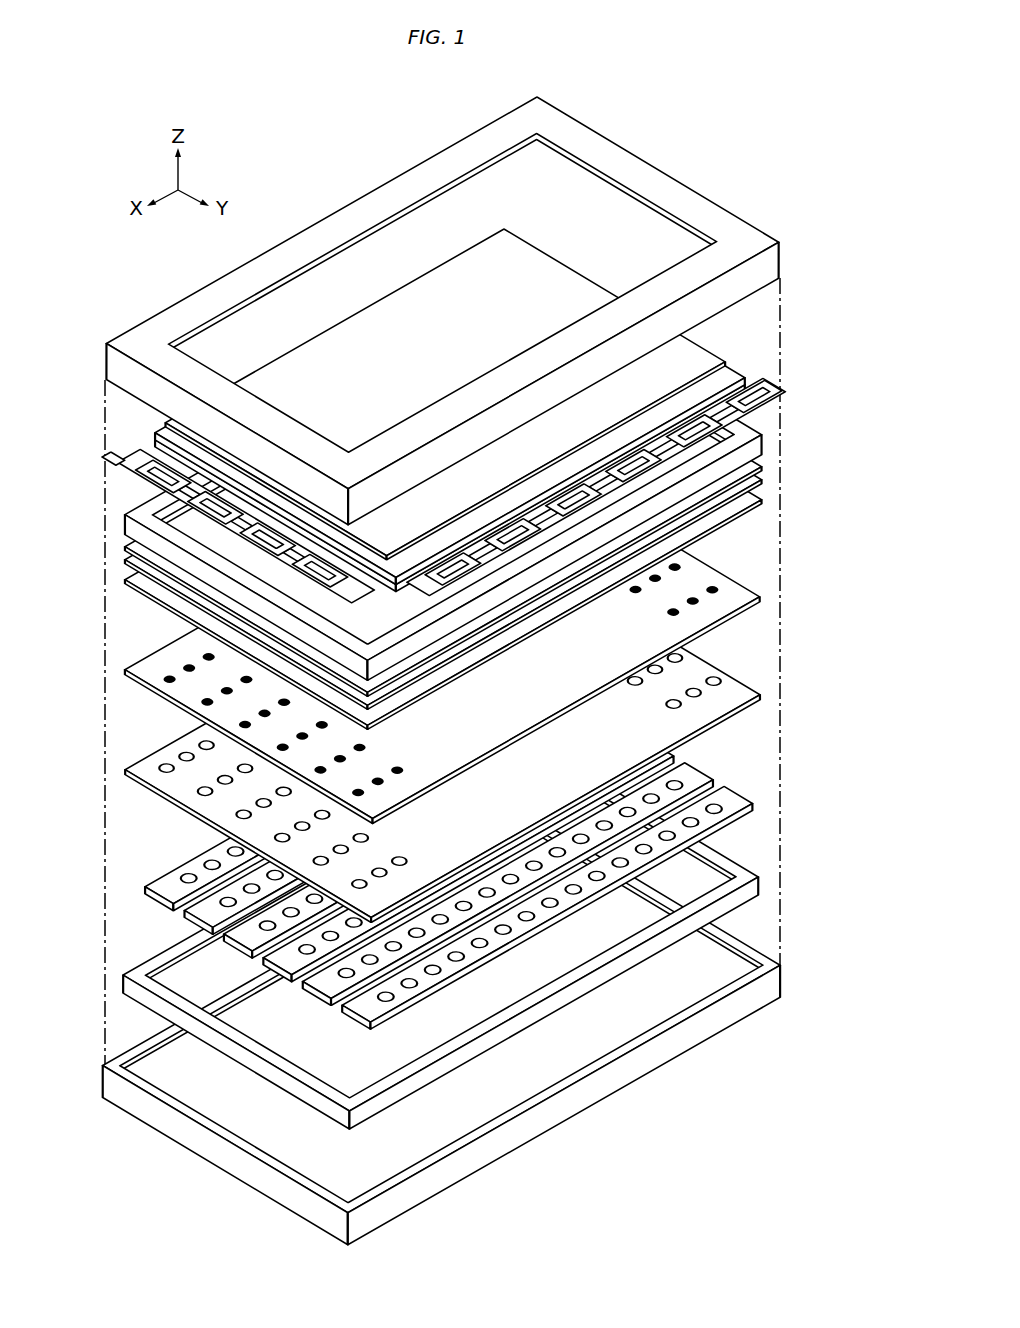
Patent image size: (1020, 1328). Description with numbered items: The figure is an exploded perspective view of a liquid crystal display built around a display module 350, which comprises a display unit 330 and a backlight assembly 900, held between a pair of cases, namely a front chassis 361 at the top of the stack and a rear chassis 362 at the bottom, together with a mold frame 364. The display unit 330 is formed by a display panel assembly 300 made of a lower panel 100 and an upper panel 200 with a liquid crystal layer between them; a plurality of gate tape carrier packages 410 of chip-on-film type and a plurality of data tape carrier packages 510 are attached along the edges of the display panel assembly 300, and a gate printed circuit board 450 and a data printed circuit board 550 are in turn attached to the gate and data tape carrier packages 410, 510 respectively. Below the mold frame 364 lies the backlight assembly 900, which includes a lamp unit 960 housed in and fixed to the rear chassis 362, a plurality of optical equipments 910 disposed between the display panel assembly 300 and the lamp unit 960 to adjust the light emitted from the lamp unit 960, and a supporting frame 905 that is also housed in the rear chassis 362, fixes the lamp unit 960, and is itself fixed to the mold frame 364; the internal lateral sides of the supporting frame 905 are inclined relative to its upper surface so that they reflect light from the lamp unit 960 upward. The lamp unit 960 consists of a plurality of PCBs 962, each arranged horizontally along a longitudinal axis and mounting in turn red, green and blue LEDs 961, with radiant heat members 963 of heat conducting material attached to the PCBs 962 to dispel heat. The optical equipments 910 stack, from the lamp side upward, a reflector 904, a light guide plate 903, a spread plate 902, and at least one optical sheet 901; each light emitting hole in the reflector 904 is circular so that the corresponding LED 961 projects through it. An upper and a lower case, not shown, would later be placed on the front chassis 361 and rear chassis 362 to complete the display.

The lower panel 100 is at (750, 393).
The upper panel 200 is at (745, 378).
The display panel assembly 300 is at (514, 412).
The display unit 330 is at (735, 312).
The display module 350 is at (70, 457).
The front chassis 361 is at (657, 170).
The rear chassis 362 is at (797, 966).
The mold frame 364 is at (764, 440).
The gate tape carrier packages 410 is at (145, 478).
The gate printed circuit board 450 is at (126, 464).
The data tape carrier packages 510 is at (748, 407).
The data printed circuit board 550 is at (768, 395).
The backlight assembly 900 is at (505, 725).
The optical sheet 901 is at (805, 688).
The spread plate 902 is at (762, 510).
The light guide plate 903 is at (758, 593).
The reflector 904 is at (736, 667).
The supporting frame 905 is at (772, 888).
The optical equipments 910 is at (489, 621).
The lamp unit 960 is at (480, 848).
The LEDs 961 is at (703, 790).
The PCBs 962 is at (741, 800).
The radiant heat members 963 is at (750, 818).